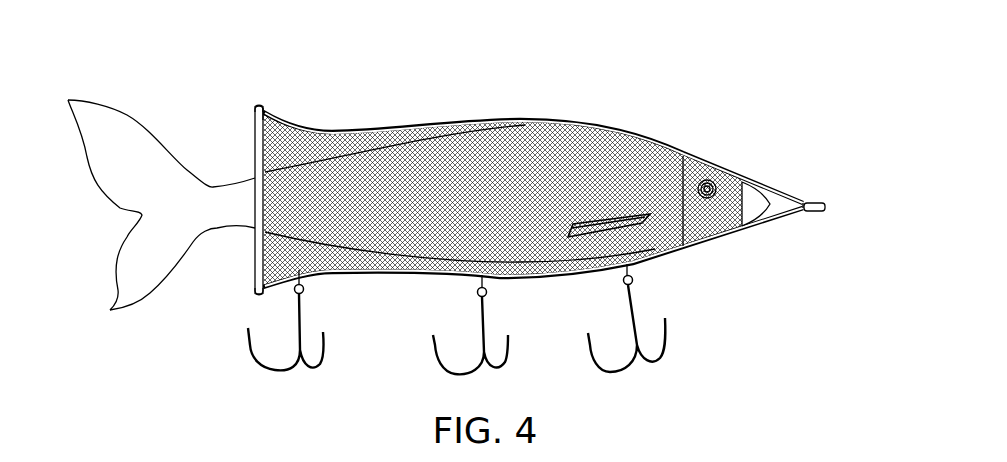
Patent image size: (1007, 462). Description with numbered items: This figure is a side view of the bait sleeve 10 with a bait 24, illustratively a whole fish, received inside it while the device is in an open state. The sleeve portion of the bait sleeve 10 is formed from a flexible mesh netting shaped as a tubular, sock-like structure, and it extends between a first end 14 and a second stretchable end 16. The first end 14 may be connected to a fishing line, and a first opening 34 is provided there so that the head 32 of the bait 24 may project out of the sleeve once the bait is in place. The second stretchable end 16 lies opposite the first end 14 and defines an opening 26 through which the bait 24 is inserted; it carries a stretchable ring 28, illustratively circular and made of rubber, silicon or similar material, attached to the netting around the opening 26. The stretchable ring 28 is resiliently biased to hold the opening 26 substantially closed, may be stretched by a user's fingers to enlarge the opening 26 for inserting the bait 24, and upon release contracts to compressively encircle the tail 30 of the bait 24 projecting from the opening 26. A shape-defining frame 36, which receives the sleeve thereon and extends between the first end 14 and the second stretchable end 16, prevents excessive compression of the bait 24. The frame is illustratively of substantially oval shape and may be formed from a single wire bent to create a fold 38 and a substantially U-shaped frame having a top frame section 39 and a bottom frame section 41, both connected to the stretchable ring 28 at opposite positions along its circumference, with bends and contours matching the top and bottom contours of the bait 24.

The bait sleeve 10 is at (774, 96).
The first end 14 is at (802, 176).
The second stretchable end 16 is at (533, 155).
The bait 24 is at (107, 122).
The opening 26 is at (252, 150).
The stretchable ring 28 is at (257, 116).
The tail 30 is at (225, 218).
The head 32 is at (708, 200).
The first opening 34 is at (746, 200).
The shape-defining frame 36 is at (327, 130).
The fold 38 is at (802, 221).
The top frame section 39 is at (265, 111).
The bottom frame section 41 is at (269, 297).